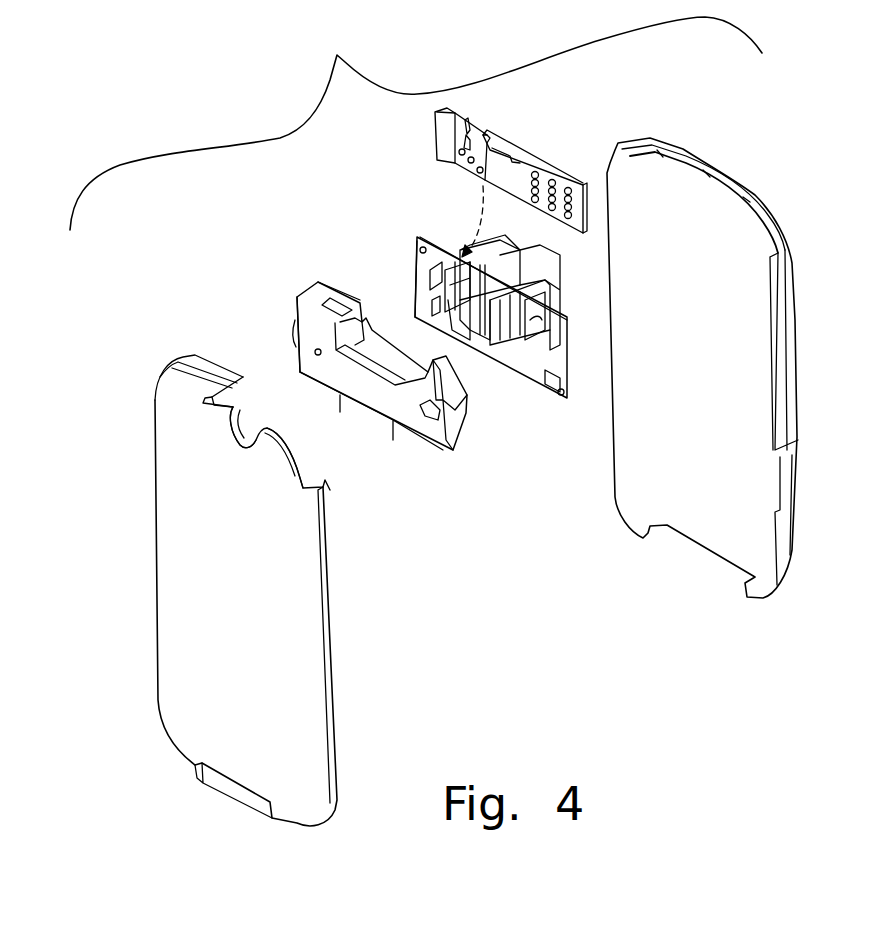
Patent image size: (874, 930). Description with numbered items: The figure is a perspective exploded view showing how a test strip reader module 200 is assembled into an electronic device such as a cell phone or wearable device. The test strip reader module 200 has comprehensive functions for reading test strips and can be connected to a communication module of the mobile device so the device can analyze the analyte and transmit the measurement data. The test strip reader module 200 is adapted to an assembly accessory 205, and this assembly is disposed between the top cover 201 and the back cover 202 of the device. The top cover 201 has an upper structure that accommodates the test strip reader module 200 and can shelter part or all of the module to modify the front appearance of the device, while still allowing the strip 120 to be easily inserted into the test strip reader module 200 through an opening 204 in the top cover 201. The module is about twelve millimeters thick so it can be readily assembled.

The strip 120 is at (508, 147).
The test strip reader module 200 is at (413, 257).
The top cover 201 is at (170, 393).
The back cover 202 is at (718, 183).
The notch 204 is at (250, 405).
The assembly accessory 205 is at (307, 303).